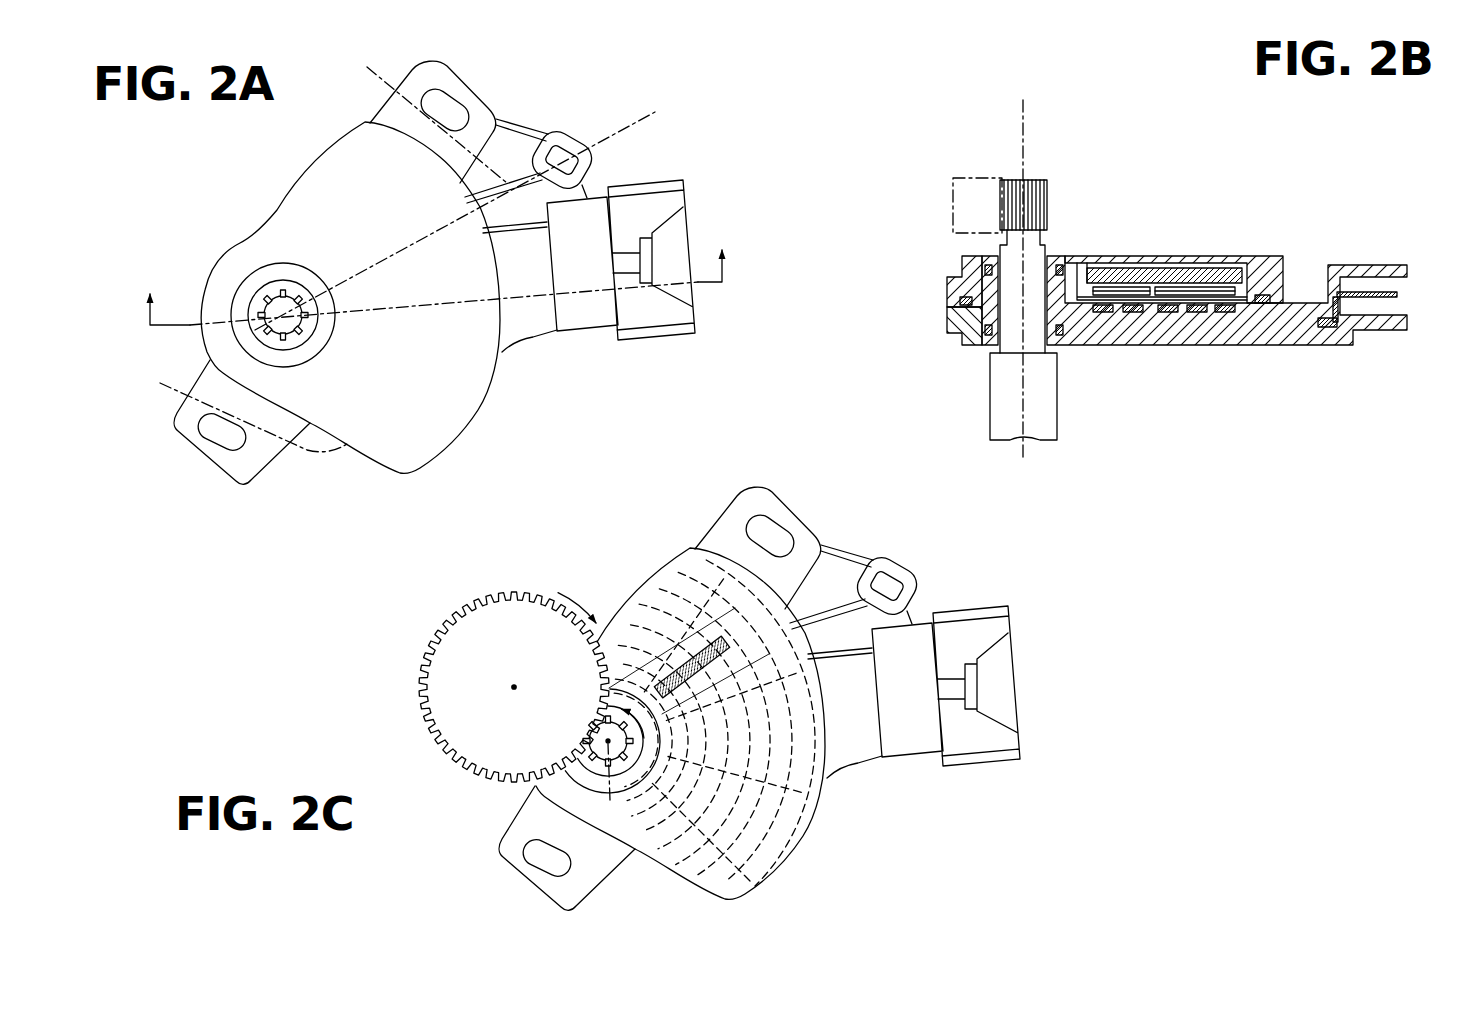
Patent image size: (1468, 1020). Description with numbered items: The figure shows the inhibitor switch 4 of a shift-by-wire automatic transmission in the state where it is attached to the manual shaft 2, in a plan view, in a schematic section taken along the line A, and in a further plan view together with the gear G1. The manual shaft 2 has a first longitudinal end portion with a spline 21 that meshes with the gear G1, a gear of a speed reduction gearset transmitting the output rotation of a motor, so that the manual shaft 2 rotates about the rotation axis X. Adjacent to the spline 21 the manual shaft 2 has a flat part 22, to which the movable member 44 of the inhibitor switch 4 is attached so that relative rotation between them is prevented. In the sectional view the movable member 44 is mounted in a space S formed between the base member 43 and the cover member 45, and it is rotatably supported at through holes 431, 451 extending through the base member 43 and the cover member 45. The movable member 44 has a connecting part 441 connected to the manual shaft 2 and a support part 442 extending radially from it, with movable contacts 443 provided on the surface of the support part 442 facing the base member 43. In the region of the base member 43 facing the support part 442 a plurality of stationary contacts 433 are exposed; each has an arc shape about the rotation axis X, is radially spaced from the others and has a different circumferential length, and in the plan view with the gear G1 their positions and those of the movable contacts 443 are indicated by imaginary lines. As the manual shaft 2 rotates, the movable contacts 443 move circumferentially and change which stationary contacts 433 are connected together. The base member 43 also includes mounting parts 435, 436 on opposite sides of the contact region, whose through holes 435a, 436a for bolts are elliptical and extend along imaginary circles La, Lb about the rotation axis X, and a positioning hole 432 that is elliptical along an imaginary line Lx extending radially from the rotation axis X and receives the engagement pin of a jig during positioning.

In FIG. 2B, the manual shaft 2 is at (1062, 291).
In FIG. 2A, the inhibitor switch 4 is at (454, 283).
In FIG. 2B, the inhibitor switch 4 is at (1138, 271).
In FIG. 2C, the inhibitor switch 4 is at (793, 694).
In FIG. 2A, the spline 21 is at (292, 298).
In FIG. 2B, the spline 21 is at (1043, 176).
In FIG. 2C, the spline 21 is at (601, 729).
In FIG. 2B, the flat part 22 is at (1013, 350).
In FIG. 2A, the base member 43 is at (535, 340).
In FIG. 2B, the base member 43 is at (1300, 348).
In FIG. 2C, the base member 43 is at (736, 723).
In FIG. 2B, the movable member 44 is at (1152, 221).
In FIG. 2B, the cover member 45 is at (1272, 260).
In FIG. 2C, the cover member 45 is at (775, 723).
In FIG. 2B, the through hole 431 is at (955, 318).
In FIG. 2A, the positioning hole 432 is at (567, 137).
In FIG. 2C, the positioning hole 432 is at (891, 587).
In FIG. 2B, the stationary contacts 433 is at (1167, 313).
In FIG. 2C, the stationary contacts 433 is at (731, 885).
In FIG. 2A, the mounting part 435 is at (186, 440).
In FIG. 2C, the mounting part 435 is at (531, 848).
In FIG. 2A, the through hole 435a is at (223, 460).
In FIG. 2C, the through hole 435a is at (501, 877).
In FIG. 2A, the mounting part 436 is at (482, 112).
In FIG. 2C, the mounting part 436 is at (787, 548).
In FIG. 2A, the through hole 436a is at (452, 96).
In FIG. 2C, the through hole 436a is at (806, 512).
In FIG. 2B, the connecting part 441 is at (1060, 258).
In FIG. 2B, the support part 442 is at (1195, 270).
In FIG. 2C, the support part 442 is at (689, 604).
In FIG. 2B, the movable contacts 443 is at (1239, 205).
In FIG. 2C, the movable contacts 443 is at (650, 625).
In FIG. 2B, the through hole 451 is at (975, 282).
In FIG. 2B, the gear G1 is at (973, 190).
In FIG. 2C, the gear G1 is at (514, 665).
In FIG. 2B, the space S is at (1260, 294).
In FIG. 2A, the rotation axis X is at (262, 307).
In FIG. 2B, the rotation axis X is at (1026, 262).
In FIG. 2C, the rotation axis X is at (619, 785).
In FIG. 2A, the imaginary circle La is at (249, 402).
In FIG. 2A, the imaginary circle Lb is at (418, 116).
In FIG. 2A, the imaginary line Lx is at (474, 206).
In FIG. 2A, the A-A section A is at (437, 297).